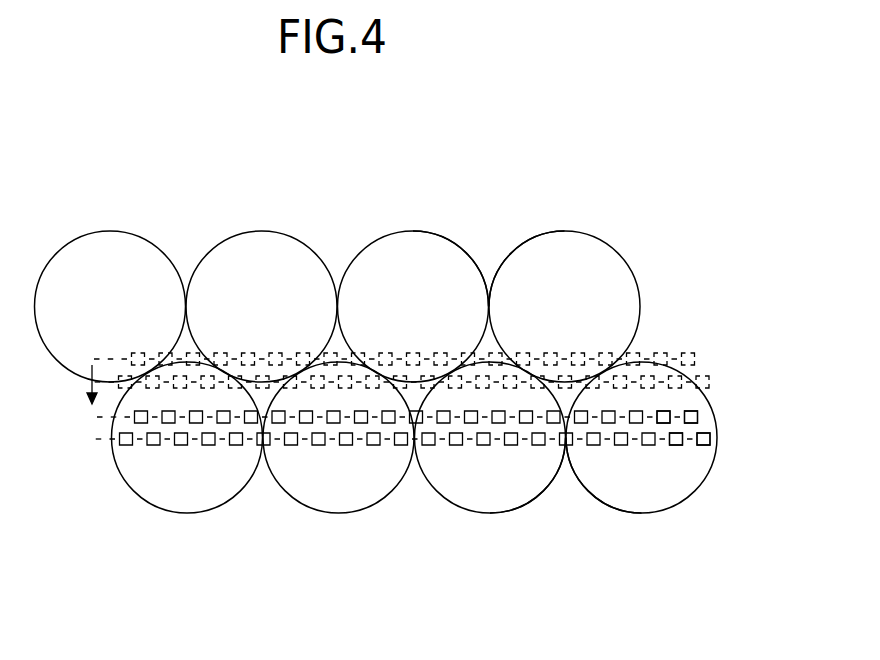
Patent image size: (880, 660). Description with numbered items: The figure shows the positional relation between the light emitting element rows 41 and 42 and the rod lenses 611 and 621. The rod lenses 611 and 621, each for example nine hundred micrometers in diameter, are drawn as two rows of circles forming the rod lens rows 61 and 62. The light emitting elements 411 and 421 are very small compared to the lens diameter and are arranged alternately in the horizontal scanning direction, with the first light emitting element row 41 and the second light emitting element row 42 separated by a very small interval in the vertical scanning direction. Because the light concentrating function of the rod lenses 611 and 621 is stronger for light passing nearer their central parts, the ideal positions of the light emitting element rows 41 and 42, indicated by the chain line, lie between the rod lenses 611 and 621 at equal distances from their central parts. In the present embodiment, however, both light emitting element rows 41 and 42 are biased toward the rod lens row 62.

The rod lens row 61 is at (260, 231).
The rod lens 611 is at (526, 242).
The rod lens row 62 is at (342, 513).
The rod lens 621 is at (597, 498).
The first light emitting element row 41 is at (697, 413).
The light emitting element 411 is at (690, 411).
The second light emitting element row 42 is at (710, 438).
The light emitting element 421 is at (703, 446).